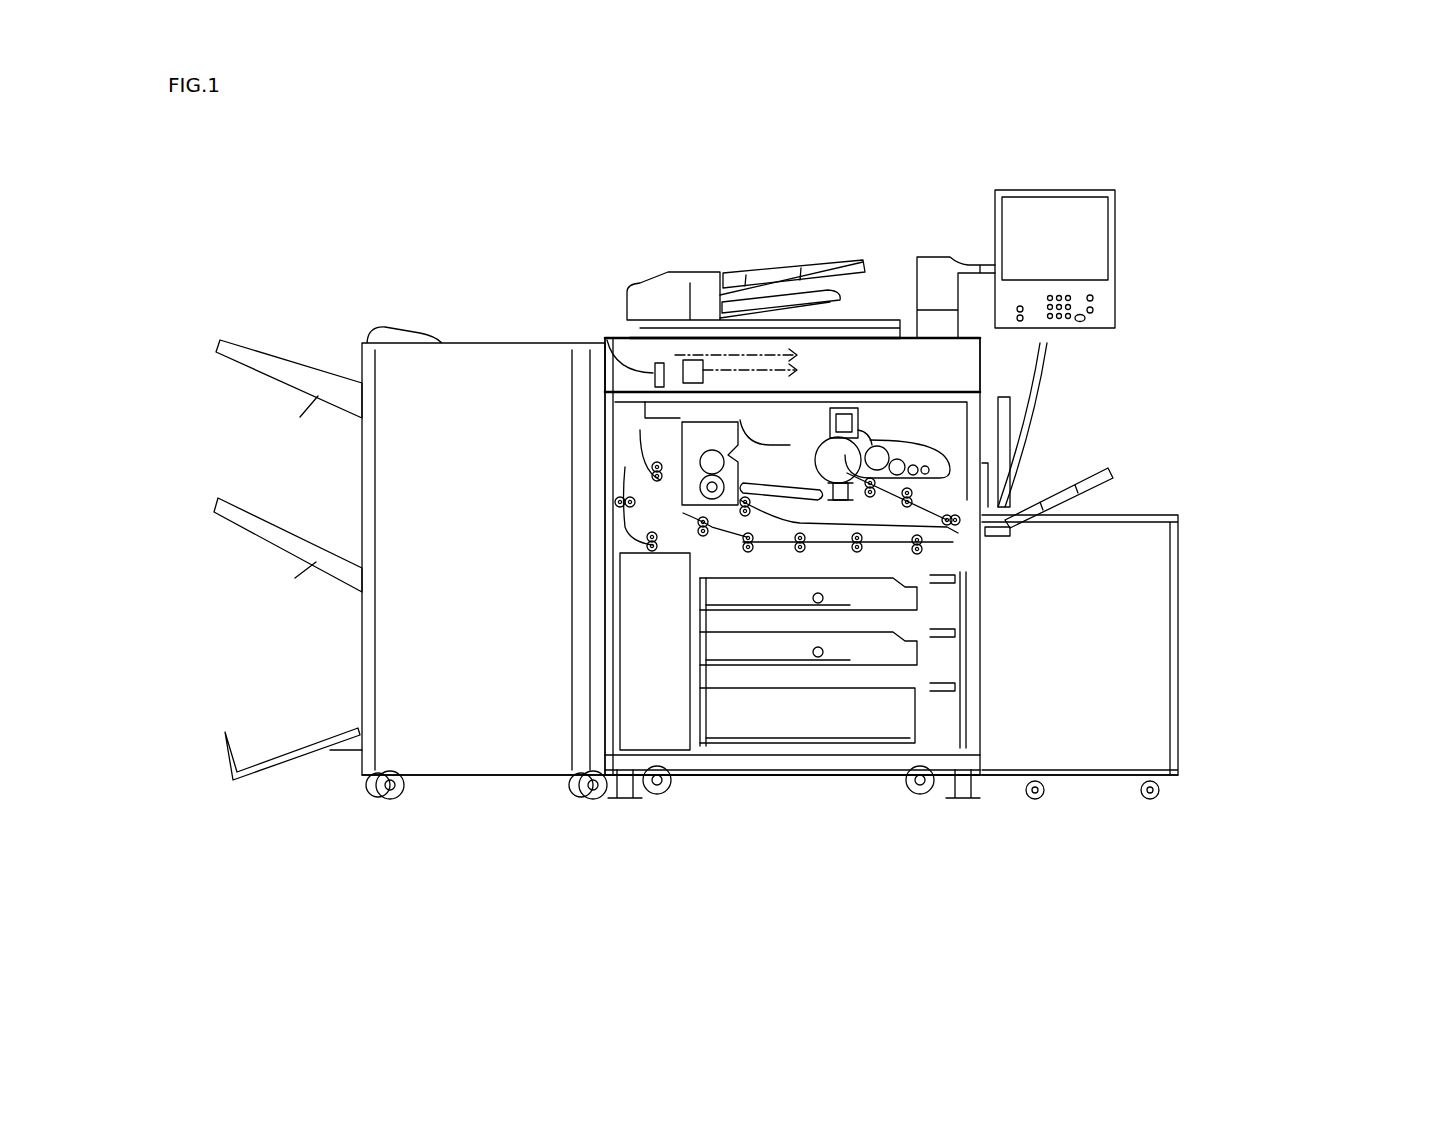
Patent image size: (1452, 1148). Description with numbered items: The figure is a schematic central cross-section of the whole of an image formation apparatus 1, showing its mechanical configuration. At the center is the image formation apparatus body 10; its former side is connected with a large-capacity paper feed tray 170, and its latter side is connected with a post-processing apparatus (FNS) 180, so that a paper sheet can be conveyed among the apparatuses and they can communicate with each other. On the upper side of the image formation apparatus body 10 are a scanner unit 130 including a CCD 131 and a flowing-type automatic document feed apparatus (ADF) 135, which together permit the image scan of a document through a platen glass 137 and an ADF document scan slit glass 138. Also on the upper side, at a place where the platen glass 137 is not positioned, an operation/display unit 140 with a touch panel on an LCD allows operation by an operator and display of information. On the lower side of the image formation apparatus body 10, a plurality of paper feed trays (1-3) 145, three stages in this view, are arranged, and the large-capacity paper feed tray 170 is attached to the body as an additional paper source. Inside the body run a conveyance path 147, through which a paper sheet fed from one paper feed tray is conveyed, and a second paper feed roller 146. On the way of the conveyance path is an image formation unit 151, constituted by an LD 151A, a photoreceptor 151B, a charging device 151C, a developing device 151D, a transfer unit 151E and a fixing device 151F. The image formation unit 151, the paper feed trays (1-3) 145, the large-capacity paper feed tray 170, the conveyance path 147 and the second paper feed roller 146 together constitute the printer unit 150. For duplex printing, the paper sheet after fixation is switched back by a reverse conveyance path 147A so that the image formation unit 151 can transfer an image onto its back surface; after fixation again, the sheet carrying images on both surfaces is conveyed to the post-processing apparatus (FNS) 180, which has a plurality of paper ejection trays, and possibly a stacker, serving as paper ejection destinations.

The image formation apparatus 1 is at (663, 858).
The image formation apparatus body 10 is at (750, 775).
The scanner unit 130 is at (1197, 320).
The CCD 131 is at (603, 338).
The flowing-type automatic document feed apparatus (ADF) 135 is at (780, 180).
The platen glass 137 is at (678, 243).
The ADF document scan slit glass 138 is at (417, 213).
The operation/display unit 140 is at (1012, 160).
The paper feed trays (1-3) 145 is at (855, 843).
The second paper feed roller 146 is at (1202, 607).
The conveyance path 147 is at (945, 497).
The reverse conveyance path 147A is at (685, 530).
The printer unit 150 is at (1143, 450).
The image formation unit 151 is at (783, 457).
The LD 151A is at (863, 435).
The photoreceptor 151B is at (860, 460).
The charging device 151C is at (829, 408).
The developing device 151D is at (895, 478).
The transfer unit 151E is at (840, 500).
The fixing device 151F is at (693, 460).
The large-capacity paper feed tray 170 is at (1155, 840).
The post-processing apparatus (FNS) 180 is at (217, 293).